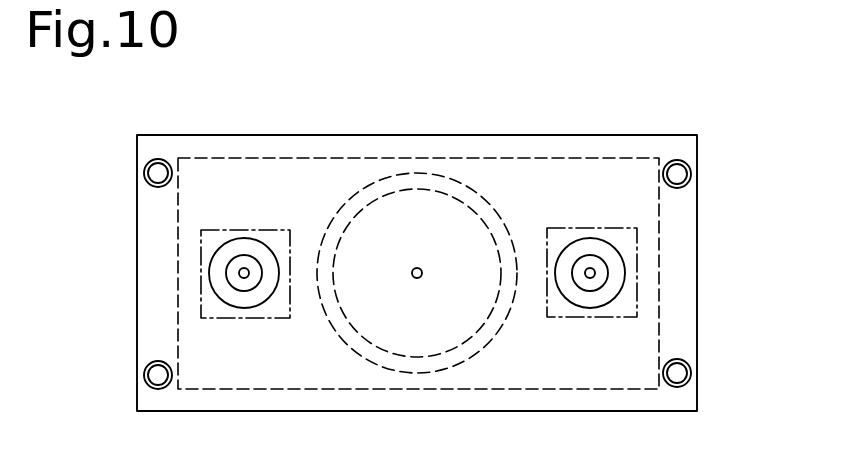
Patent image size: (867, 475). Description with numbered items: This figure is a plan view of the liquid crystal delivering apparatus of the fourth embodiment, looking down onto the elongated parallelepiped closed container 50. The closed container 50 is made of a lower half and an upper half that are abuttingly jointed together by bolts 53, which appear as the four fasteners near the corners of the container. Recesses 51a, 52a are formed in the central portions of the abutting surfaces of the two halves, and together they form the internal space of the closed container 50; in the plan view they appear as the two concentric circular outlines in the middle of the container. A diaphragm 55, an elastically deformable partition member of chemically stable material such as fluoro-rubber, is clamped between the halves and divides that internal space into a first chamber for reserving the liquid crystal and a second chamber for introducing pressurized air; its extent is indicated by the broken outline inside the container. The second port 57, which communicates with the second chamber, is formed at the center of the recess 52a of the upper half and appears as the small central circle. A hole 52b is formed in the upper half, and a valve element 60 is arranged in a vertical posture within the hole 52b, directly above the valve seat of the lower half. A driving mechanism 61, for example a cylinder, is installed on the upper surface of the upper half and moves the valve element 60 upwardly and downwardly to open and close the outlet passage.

The closed container 50 is at (318, 131).
The recess 51a is at (372, 343).
The recess 52a is at (466, 360).
The hole 52b is at (215, 257).
The bolts 53 is at (156, 173).
The diaphragm 55 is at (277, 392).
The second port 57 is at (421, 277).
The valve element 60 is at (244, 273).
The driving mechanism 61 is at (265, 229).